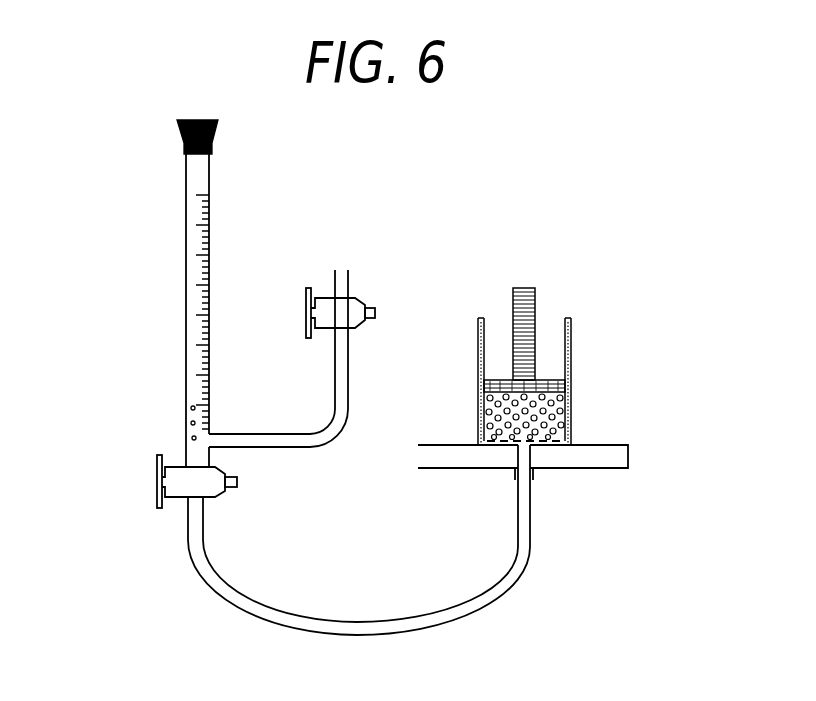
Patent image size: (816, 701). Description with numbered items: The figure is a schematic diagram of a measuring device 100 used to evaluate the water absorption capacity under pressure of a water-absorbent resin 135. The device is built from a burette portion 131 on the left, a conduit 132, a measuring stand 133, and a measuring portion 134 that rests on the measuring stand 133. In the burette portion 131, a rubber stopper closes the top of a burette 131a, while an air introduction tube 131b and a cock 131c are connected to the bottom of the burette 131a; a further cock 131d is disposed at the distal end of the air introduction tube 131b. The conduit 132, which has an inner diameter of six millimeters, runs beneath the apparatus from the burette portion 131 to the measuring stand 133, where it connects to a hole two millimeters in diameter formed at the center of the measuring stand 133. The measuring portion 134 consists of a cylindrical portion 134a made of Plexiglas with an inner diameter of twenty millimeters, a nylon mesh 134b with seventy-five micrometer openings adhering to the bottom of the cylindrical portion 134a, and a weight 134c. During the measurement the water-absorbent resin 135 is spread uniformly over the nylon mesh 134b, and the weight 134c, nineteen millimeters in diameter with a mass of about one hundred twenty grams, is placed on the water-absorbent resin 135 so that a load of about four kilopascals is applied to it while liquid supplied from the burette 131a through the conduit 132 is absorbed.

The measuring device 100 is at (410, 179).
The burette portion 131 is at (168, 264).
The burette 131a is at (208, 228).
The air introduction tube 131b is at (238, 432).
The cock 131c is at (160, 470).
The cock 131d is at (353, 310).
The conduit 132 is at (297, 618).
The measuring stand 133 is at (618, 503).
The measuring portion 134 is at (582, 327).
The cylindrical portion 134a is at (478, 345).
The nylon mesh 134b is at (501, 447).
The weight 134c is at (537, 292).
The water-absorbent resin 135 is at (570, 417).